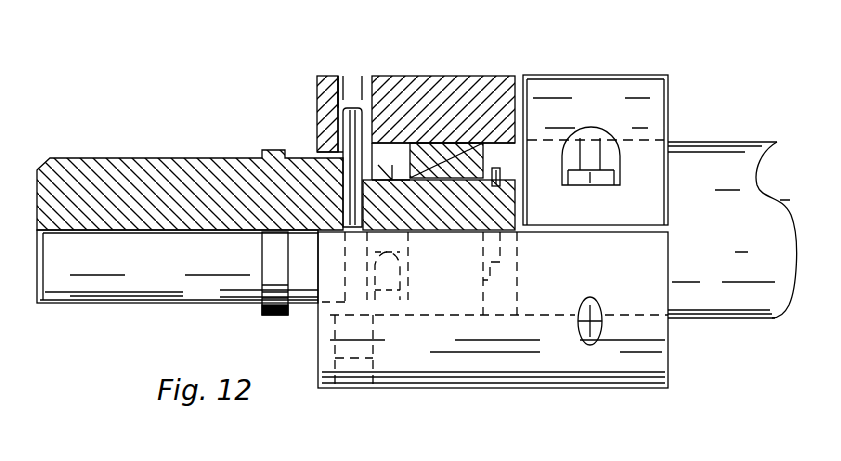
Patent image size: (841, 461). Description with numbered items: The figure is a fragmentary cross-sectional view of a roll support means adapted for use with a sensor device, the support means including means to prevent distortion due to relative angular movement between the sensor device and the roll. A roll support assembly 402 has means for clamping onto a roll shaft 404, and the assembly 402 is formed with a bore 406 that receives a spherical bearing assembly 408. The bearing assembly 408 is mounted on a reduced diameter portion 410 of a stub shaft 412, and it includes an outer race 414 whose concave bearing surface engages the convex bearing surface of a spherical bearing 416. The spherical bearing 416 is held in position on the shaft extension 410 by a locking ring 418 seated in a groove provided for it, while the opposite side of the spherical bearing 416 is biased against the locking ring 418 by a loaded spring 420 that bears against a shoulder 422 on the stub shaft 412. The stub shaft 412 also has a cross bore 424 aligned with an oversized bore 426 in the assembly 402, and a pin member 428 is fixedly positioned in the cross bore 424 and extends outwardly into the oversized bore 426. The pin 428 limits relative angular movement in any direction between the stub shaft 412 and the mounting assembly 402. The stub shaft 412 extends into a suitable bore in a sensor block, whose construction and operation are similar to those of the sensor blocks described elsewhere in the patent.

The roll support assembly 402 is at (377, 61).
The roll shaft 404 is at (710, 200).
The bore 406 is at (504, 90).
The spherical bearing assembly 408 is at (437, 143).
The reduced diameter portion 410 is at (475, 207).
The stub shaft 412 is at (182, 305).
The outer race 414 is at (463, 143).
The spherical bearing 416 is at (485, 155).
The locking ring 418 is at (503, 184).
The loaded spring 420 is at (418, 290).
The shoulder 422 is at (415, 255).
The cross bore 424 is at (318, 152).
The oversized bore 426 is at (344, 75).
The pin member 428 is at (354, 100).